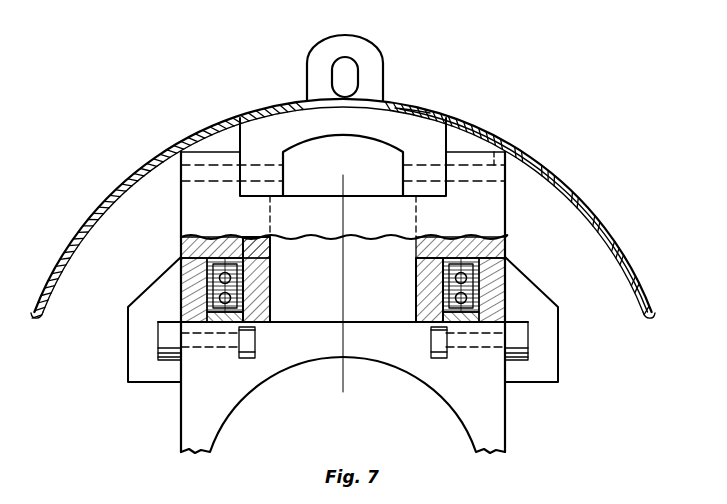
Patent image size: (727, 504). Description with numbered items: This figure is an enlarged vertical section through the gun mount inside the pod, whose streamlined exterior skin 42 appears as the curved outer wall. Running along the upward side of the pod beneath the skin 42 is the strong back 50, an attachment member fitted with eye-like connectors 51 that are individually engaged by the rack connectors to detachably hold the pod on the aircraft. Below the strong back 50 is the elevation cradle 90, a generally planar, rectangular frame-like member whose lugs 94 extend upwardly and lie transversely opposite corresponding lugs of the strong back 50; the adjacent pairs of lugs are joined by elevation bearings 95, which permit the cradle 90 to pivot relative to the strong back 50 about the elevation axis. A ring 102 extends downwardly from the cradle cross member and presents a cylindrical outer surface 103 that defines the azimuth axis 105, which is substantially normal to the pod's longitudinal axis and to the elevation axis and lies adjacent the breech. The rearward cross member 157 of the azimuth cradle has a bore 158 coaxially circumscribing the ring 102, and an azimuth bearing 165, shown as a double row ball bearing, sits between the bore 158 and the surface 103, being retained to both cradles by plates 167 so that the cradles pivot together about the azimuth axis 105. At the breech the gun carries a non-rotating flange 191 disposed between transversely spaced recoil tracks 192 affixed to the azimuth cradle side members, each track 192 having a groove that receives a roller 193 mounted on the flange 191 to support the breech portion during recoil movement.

The exterior skin 42 is at (632, 254).
The strong back 50 is at (413, 124).
The eye-like connectors 51 is at (378, 50).
The elevation cradle 90 is at (508, 200).
The lugs 94 is at (181, 202).
The elevation bearings 95 is at (497, 137).
The ring 102 is at (271, 262).
The cylindrical outer surface 103 is at (271, 294).
The azimuth axis 105 is at (345, 382).
The rearward cross member 157 is at (180, 274).
The bore 158 is at (215, 237).
The azimuth bearing 165 is at (315, 269).
The plates 167 is at (414, 306).
The non-rotating flange 191 is at (506, 434).
The recoil tracks 192 is at (146, 289).
The roller 193 is at (158, 338).